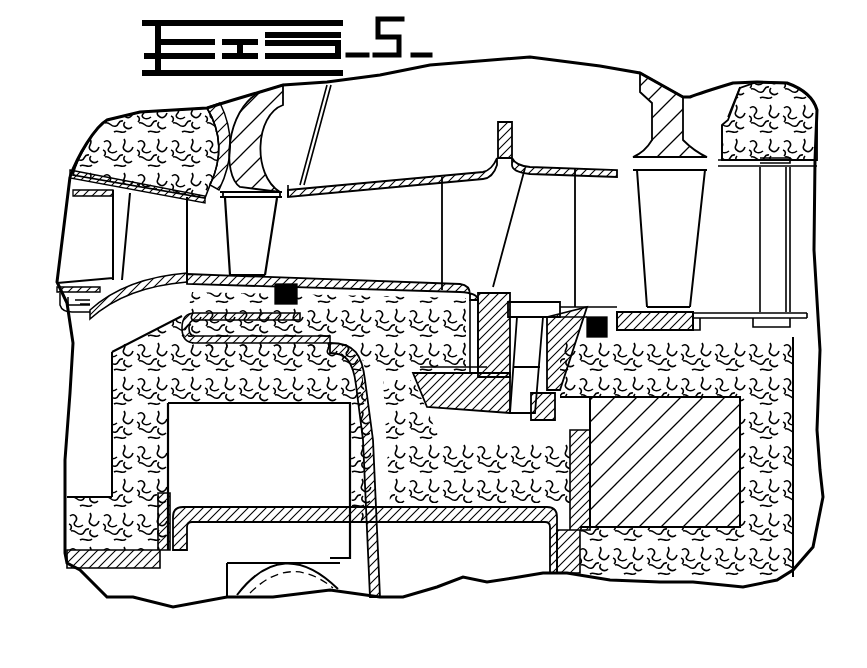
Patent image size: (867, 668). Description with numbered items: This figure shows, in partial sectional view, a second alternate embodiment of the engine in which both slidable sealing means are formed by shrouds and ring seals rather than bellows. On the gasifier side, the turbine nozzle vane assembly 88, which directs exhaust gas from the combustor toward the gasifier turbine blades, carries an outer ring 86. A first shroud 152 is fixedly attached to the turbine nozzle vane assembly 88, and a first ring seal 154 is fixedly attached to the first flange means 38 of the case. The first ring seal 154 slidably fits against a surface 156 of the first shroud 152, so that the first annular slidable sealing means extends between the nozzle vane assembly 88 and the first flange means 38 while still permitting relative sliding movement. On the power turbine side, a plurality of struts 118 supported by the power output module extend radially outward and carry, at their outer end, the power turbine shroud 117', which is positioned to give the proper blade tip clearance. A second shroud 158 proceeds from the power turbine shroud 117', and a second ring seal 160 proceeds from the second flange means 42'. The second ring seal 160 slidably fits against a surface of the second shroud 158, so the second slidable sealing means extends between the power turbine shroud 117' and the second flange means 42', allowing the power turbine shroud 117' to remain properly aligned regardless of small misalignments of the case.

The turbine nozzle vane assembly 88 is at (106, 235).
The outer ring 86 is at (306, 250).
The first ring seal 154 is at (292, 284).
The surface 156 is at (324, 285).
The first shroud 152 is at (216, 313).
The first flange means 38 is at (300, 383).
The second flange means 42' is at (500, 340).
The second ring seal 160 is at (610, 340).
The second shroud 158 is at (642, 378).
The struts 118 is at (770, 238).
The power turbine shroud 117' is at (712, 299).